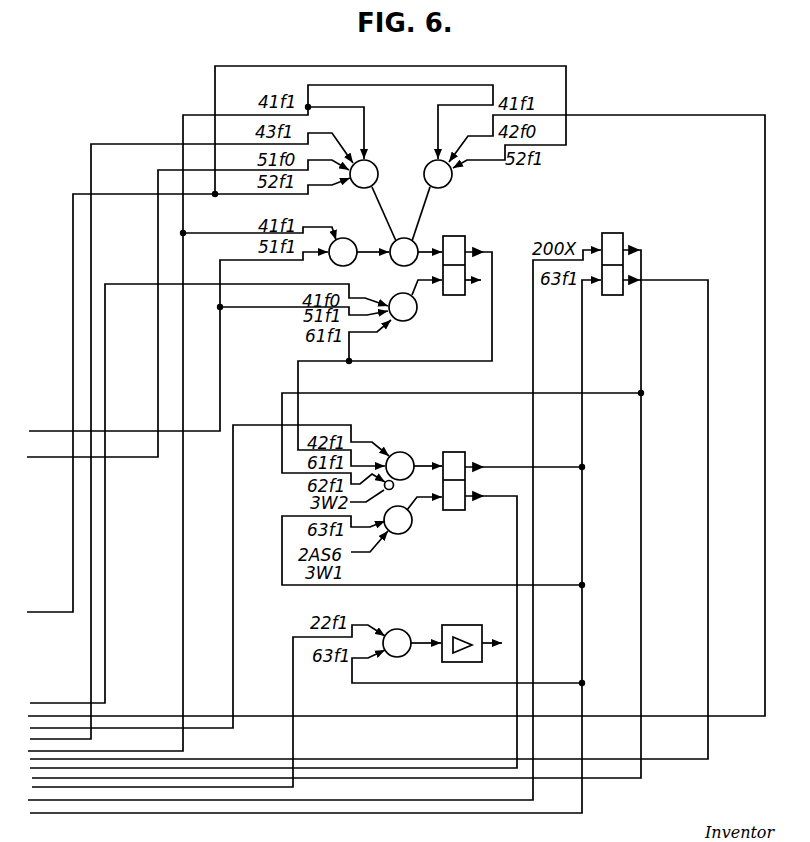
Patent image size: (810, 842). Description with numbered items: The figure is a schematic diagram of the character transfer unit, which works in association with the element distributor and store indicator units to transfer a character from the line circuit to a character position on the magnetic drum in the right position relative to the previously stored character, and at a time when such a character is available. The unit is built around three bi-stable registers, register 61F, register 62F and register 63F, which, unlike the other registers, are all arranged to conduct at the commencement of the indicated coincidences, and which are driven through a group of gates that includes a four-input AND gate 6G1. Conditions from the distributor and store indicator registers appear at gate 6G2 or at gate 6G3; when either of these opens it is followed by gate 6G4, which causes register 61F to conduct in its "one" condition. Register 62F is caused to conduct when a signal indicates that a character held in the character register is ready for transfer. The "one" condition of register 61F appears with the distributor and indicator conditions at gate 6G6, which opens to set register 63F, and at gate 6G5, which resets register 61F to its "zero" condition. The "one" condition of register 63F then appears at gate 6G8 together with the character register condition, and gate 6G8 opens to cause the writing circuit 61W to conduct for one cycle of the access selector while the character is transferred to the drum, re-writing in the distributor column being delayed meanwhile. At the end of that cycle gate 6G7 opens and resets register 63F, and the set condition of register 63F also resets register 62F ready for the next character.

The AND gate (4 inputs) 6G1 is at (379, 164).
The gate 6G2 is at (458, 177).
The gate 6G3 is at (353, 241).
The gate 6G4 is at (390, 263).
The gate 6G5 is at (415, 317).
The gate 6G6 is at (400, 461).
The gate 6G7 is at (413, 528).
The gate 6G8 is at (400, 631).
The register 61F is at (459, 255).
The register 62F is at (616, 253).
The register 63F is at (460, 471).
The writing circuit 61W is at (465, 632).